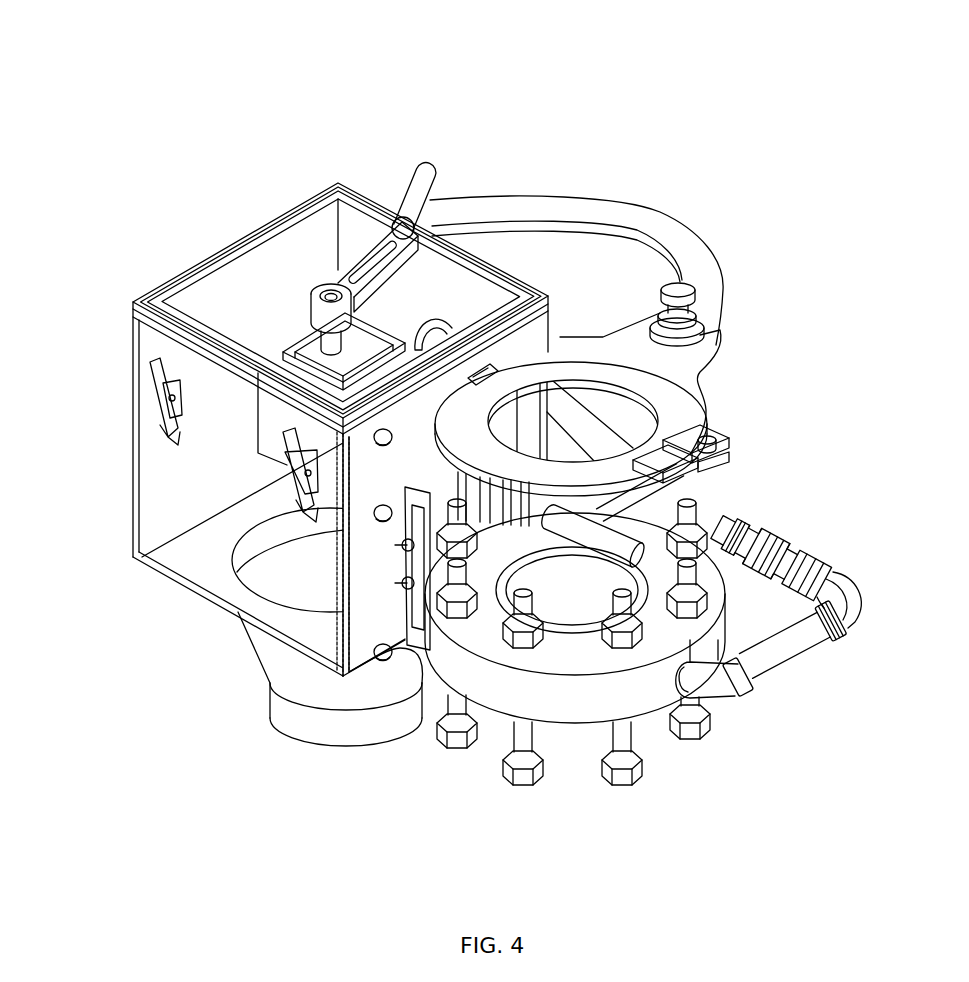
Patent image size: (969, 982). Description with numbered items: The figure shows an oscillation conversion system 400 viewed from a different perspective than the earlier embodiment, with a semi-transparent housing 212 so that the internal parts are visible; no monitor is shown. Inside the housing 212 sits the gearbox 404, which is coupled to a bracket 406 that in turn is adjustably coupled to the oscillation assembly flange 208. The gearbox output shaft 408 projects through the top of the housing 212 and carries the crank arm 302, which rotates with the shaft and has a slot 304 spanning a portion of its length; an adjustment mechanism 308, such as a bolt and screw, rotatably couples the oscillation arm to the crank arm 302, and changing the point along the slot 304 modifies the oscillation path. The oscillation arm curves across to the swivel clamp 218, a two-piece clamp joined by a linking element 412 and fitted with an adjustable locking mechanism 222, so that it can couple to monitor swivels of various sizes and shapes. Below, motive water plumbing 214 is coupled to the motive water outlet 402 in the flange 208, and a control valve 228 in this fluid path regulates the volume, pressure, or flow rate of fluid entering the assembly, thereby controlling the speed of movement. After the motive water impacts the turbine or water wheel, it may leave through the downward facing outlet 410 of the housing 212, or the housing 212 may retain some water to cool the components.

The oscillation conversion system 400 is at (714, 90).
The housing 212 is at (135, 500).
The gearbox 404 is at (275, 425).
The downward facing outlet 410 is at (283, 735).
The bracket 406 is at (372, 612).
The gearbox output shaft 408 is at (327, 290).
The crank arm 302 is at (328, 292).
The slot 304 is at (385, 262).
The adjustment mechanism 308 is at (427, 172).
The linking element 412 is at (482, 372).
The clamp 218 is at (683, 393).
The adjustable locking mechanism 222 is at (700, 493).
The oscillation assembly flange 208 is at (587, 715).
The motive water outlet 402 is at (677, 680).
The motive water plumbing 214 is at (848, 597).
The control valve 228 is at (794, 562).